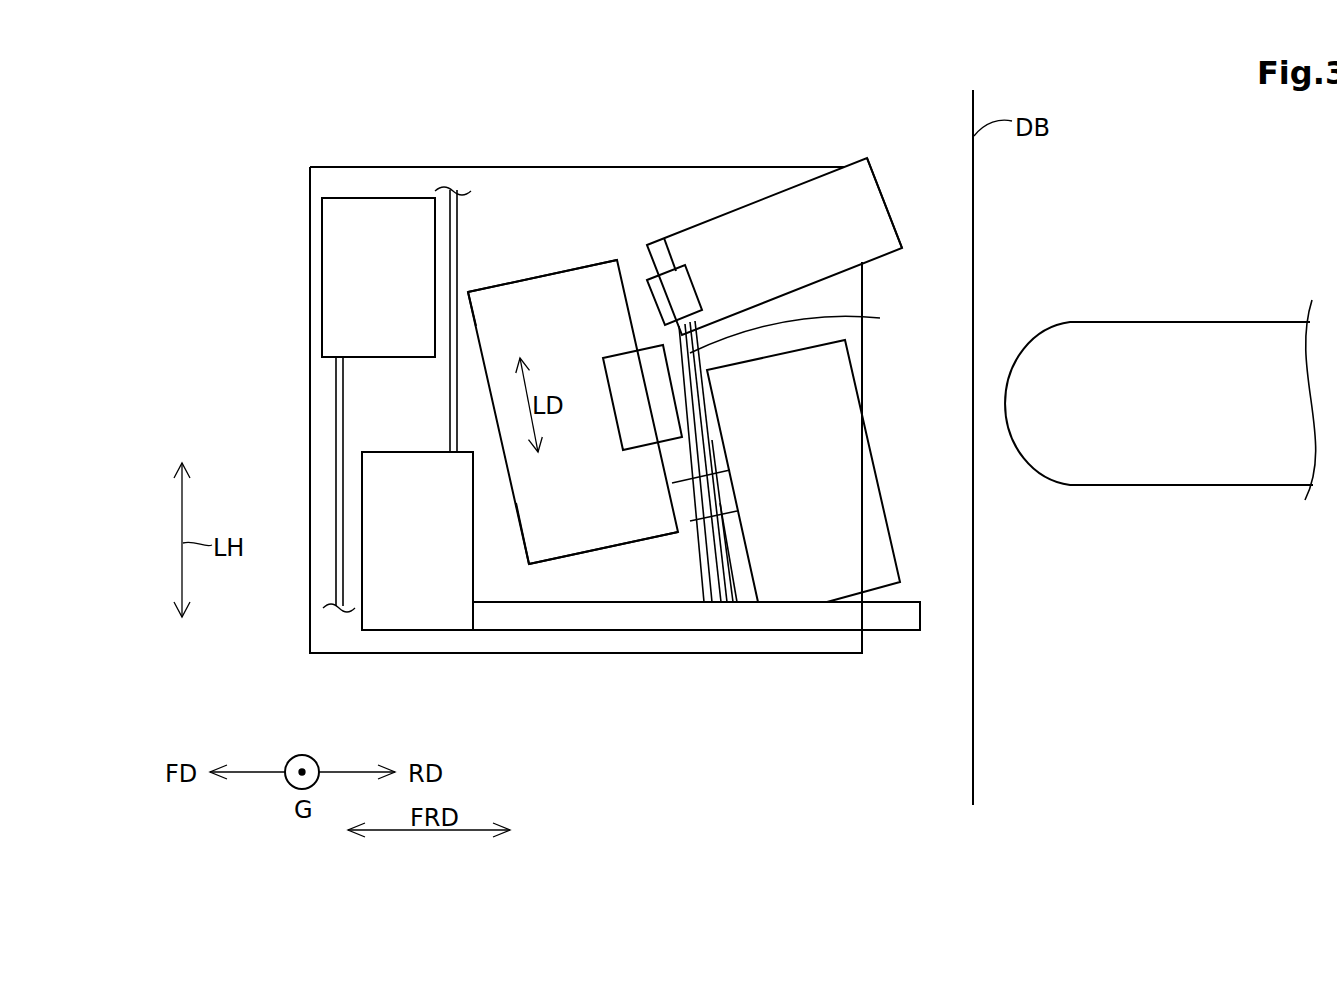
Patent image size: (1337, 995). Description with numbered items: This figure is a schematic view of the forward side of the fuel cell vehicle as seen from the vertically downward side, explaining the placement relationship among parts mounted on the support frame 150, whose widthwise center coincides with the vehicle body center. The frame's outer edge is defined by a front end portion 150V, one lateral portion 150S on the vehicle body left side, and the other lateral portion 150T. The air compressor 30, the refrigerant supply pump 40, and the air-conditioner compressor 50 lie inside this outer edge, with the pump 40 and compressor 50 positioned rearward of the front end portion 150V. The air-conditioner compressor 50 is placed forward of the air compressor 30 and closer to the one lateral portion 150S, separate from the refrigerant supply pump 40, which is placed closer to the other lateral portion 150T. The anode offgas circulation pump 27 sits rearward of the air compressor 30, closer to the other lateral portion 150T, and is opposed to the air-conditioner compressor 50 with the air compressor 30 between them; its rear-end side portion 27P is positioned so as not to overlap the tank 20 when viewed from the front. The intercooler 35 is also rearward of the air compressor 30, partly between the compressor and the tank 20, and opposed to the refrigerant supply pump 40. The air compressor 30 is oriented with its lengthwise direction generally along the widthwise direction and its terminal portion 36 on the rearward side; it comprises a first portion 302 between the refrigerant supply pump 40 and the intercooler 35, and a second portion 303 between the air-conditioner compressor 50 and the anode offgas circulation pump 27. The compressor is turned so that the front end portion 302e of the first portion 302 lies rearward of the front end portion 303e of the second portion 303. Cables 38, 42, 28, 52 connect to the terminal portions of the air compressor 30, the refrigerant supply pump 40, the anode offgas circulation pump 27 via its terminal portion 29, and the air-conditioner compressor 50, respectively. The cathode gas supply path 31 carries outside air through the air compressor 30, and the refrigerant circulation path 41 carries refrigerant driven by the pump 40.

The tank 20 is at (1187, 322).
The anode offgas circulation pump 27 is at (778, 212).
The rear-end side portion 27P is at (862, 228).
The cable 28 is at (880, 318).
The terminal portion 29 is at (672, 270).
The air compressor 30 is at (540, 293).
The first portion 302 is at (592, 507).
The front end portion 302e is at (516, 503).
The second portion 303 is at (570, 293).
The front end portion 303e is at (472, 314).
The cathode gas supply path 31 is at (737, 603).
The intercooler 35 is at (858, 457).
The terminal portion 36 is at (623, 360).
The cable 38 is at (703, 586).
The refrigerant supply pump 40 is at (430, 613).
The refrigerant circulation path 41 is at (543, 613).
The cable 42 is at (448, 405).
The air-conditioner compressor 50 is at (353, 213).
The cable 52 is at (340, 459).
The support frame 150 is at (808, 164).
The one lateral portion 150S is at (428, 167).
The front end portion 150V is at (308, 343).
The other lateral portion 150T is at (481, 655).